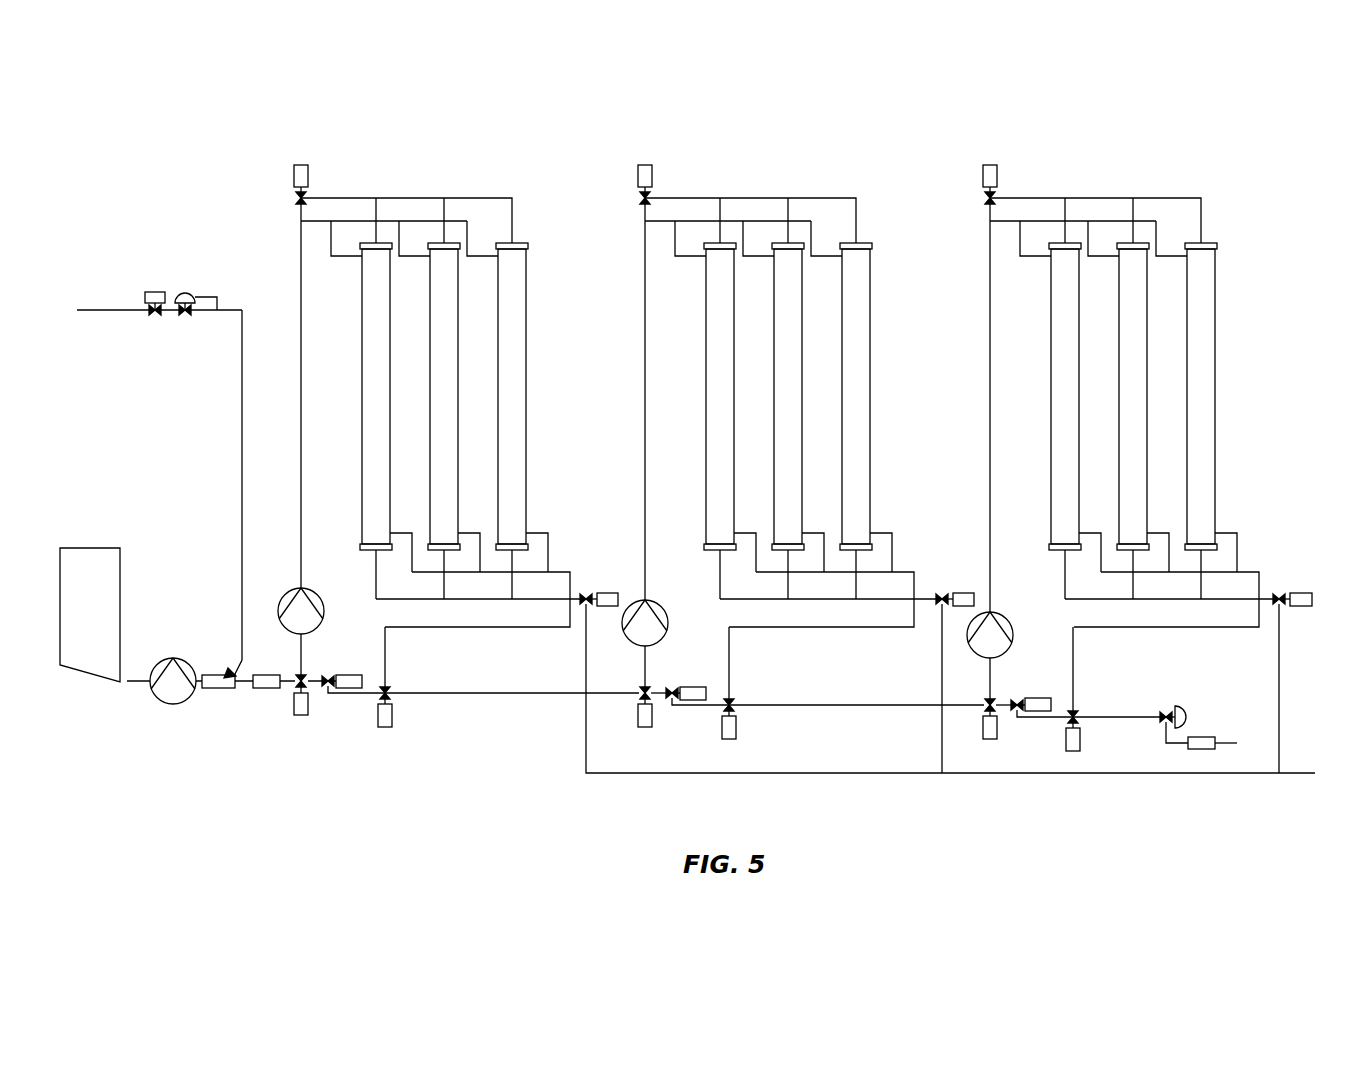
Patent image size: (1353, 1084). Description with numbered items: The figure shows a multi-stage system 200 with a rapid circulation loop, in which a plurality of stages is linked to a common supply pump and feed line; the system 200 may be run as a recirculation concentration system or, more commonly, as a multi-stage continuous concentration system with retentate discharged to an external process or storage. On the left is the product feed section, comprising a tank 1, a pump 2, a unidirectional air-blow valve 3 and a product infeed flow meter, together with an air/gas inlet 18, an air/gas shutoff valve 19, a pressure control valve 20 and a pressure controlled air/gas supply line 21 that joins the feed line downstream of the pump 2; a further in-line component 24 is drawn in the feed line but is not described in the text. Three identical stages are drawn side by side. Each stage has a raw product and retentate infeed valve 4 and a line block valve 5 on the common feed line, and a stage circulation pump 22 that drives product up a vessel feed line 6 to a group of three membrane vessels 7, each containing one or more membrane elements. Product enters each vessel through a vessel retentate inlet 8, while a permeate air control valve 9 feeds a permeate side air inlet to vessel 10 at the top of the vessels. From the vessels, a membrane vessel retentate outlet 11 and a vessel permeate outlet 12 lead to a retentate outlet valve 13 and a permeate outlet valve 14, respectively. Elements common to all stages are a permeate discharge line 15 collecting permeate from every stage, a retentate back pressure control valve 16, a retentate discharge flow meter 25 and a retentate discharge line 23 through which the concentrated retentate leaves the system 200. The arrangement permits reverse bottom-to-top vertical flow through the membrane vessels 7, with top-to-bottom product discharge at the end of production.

The tank 1 is at (122, 607).
The pump 2 is at (172, 658).
The unidirectional air-blow valve 3 is at (232, 670).
The raw product and retentate infeed valve 4 is at (302, 717).
The line block valve 5 is at (340, 673).
The vessel feed line 6 is at (302, 423).
The membrane vessel 7 is at (1216, 405).
The vessel retentate inlet 8 is at (1176, 258).
The permeate air control valve 9 is at (983, 176).
The permeate side air inlet to vessel 10 is at (1203, 218).
The membrane vessel retentate outlet 11 is at (1223, 531).
The vessel permeate outlet 12 is at (1064, 578).
The retentate outlet valve 13 is at (393, 715).
The permeate outlet valve 14 is at (598, 592).
The permeate discharge line 15 is at (586, 655).
The retentate back pressure control valve 16 is at (1166, 712).
The air/gas inlet 18 is at (104, 308).
The air/gas shutoff valve 19 is at (150, 291).
The pressure control valve 20 is at (188, 292).
The pressure controlled air/gas supply line 21 is at (241, 437).
The stage circulation pump 22 is at (290, 592).
The retentate discharge line 23 is at (1237, 743).
The sensor 24 is at (263, 690).
The retentate discharge flow meter 25 is at (1200, 737).
The multi-stage system 200 is at (1270, 263).